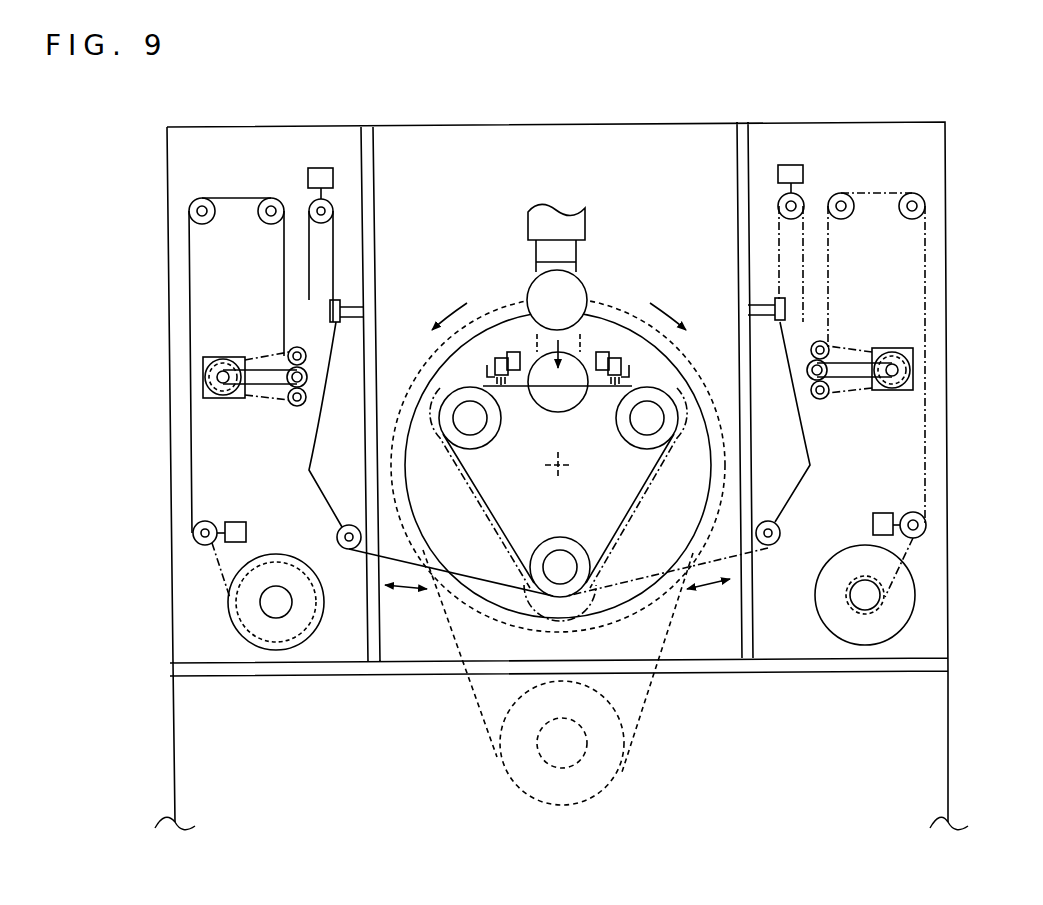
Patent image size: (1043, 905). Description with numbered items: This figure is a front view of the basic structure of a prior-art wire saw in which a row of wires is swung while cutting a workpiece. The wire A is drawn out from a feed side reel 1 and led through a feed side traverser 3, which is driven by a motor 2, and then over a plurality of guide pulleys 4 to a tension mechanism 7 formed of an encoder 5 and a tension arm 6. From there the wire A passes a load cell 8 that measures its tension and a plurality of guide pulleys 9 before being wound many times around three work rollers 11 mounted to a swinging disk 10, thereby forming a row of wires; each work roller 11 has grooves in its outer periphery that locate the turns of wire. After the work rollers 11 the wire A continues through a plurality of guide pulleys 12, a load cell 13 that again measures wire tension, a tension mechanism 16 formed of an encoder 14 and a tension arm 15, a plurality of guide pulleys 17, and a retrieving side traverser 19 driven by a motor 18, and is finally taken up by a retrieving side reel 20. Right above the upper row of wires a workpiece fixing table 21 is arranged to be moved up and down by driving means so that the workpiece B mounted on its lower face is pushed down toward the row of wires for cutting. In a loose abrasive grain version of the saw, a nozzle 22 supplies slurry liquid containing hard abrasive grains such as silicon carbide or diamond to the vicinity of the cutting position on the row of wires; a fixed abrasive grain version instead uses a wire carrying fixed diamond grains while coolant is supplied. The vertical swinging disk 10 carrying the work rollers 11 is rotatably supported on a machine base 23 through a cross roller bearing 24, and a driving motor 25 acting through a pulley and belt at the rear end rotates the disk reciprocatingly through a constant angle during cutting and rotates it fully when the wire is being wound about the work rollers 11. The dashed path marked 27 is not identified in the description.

The feed side reel 1 is at (232, 620).
The motor 2 is at (246, 528).
The feed side traverser 3 is at (205, 533).
The guide pulleys 4 is at (271, 197).
The encoder 5 is at (218, 377).
The tension arm 6 is at (265, 384).
The tension mechanism 7 is at (229, 355).
The load cell 8 is at (316, 166).
The guide pulleys 9 is at (421, 448).
The swinging disk 10 is at (630, 335).
The work rollers 11 is at (450, 403).
The guide pulleys 12 is at (707, 447).
The load cell 13 is at (790, 165).
The encoder 14 is at (913, 370).
The tension arm 15 is at (850, 377).
The tension mechanism 16 is at (886, 345).
The guide pulleys 17 is at (912, 193).
The motor 18 is at (873, 522).
The retrieving side traverser 19 is at (926, 525).
The retrieving side reel 20 is at (903, 605).
The workpiece fixing table 21 is at (551, 213).
The nozzle 22 is at (498, 353).
The machine base 23 is at (655, 133).
The cross roller bearing 24 is at (637, 610).
The driving motor 25 is at (610, 763).
The web 27 is at (483, 720).
The wire A is at (186, 272).
The workpiece B is at (535, 295).